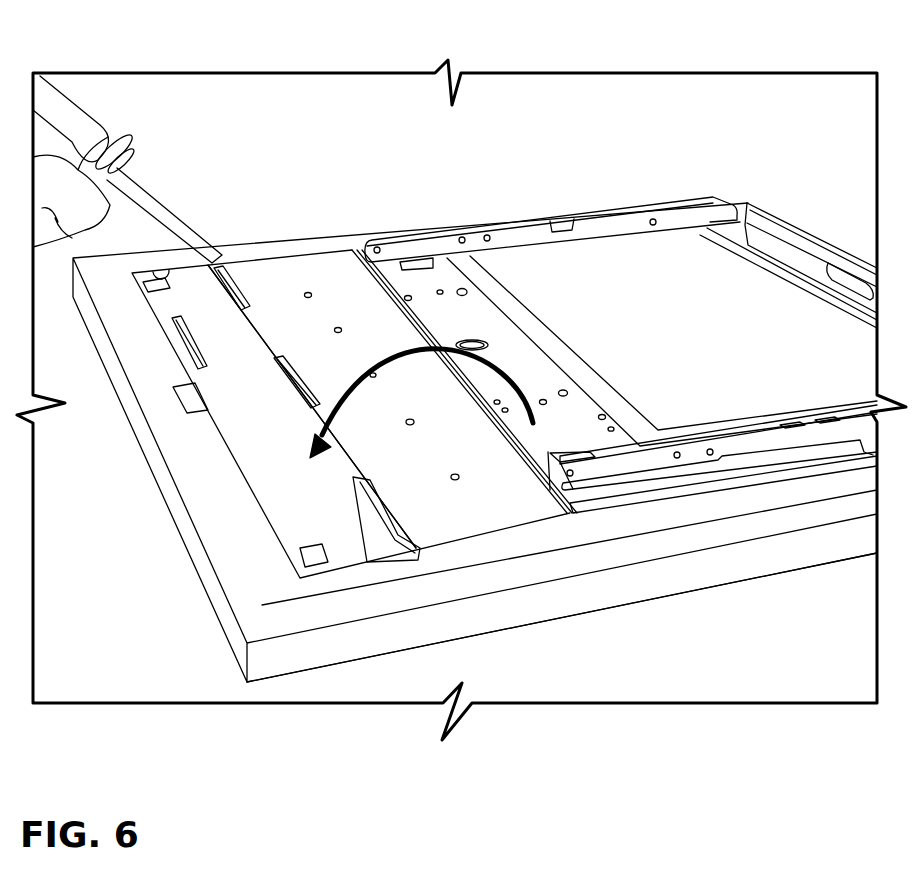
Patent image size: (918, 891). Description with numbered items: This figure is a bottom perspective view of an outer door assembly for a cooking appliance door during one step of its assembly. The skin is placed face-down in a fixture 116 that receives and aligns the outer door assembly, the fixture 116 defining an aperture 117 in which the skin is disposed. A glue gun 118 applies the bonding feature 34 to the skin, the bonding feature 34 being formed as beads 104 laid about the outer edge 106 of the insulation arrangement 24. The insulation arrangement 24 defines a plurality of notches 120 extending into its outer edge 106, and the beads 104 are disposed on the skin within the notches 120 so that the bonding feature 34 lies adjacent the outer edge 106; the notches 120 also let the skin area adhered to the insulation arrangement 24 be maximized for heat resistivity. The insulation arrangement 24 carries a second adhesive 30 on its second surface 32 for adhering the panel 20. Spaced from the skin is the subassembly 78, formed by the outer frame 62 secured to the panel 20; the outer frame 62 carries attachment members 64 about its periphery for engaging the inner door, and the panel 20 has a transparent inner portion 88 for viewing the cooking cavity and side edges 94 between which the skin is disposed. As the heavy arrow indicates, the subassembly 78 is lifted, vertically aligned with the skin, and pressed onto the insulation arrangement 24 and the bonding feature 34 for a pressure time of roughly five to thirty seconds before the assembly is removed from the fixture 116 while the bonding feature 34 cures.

The panel 20 is at (602, 507).
The insulation arrangement 24 is at (237, 272).
The second adhesive 30 is at (312, 502).
The second surface 32 is at (300, 540).
The bonding feature 34 is at (262, 283).
The outer frame 62 is at (480, 318).
The attachment members 64 is at (767, 220).
The subassembly 78 is at (555, 213).
The transparent inner portion 88 is at (688, 300).
The side edges 94 is at (673, 500).
The beads 104 is at (270, 328).
The outer edge 106 is at (420, 453).
The fixture 116 is at (657, 582).
The aperture 117 is at (198, 300).
The glue gun 118 is at (73, 118).
The notches 120 is at (278, 408).